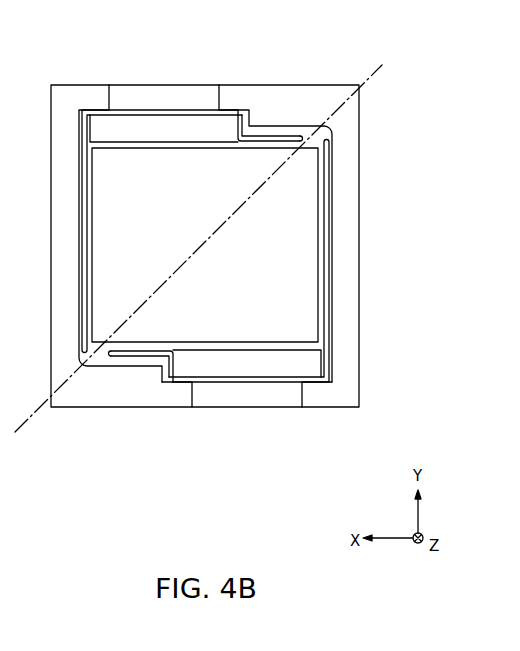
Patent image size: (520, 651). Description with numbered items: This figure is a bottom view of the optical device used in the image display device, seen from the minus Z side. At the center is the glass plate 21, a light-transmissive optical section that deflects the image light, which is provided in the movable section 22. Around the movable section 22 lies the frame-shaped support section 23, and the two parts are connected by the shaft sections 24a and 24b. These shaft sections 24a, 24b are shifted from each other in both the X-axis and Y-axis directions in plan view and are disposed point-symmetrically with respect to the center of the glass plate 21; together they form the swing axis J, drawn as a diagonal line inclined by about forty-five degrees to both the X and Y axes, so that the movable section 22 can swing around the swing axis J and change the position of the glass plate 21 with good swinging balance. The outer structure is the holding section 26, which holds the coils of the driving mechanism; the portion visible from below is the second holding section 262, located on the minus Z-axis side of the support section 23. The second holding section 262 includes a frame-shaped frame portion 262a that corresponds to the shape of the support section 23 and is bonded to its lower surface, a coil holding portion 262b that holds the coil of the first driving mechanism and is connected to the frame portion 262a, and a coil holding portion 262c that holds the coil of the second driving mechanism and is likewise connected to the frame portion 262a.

The glass plate 21 is at (110, 200).
The movable section 22 is at (90, 253).
The support section 23 is at (270, 128).
The shaft section 24a is at (302, 140).
The shaft section 24b is at (107, 353).
The holding section 26 is at (249, 246).
The second holding section 262 is at (360, 256).
The frame portion 262a is at (82, 100).
The coil holding portion 262b is at (152, 97).
The coil holding portion 262c is at (248, 393).
The swing axis J is at (204, 236).